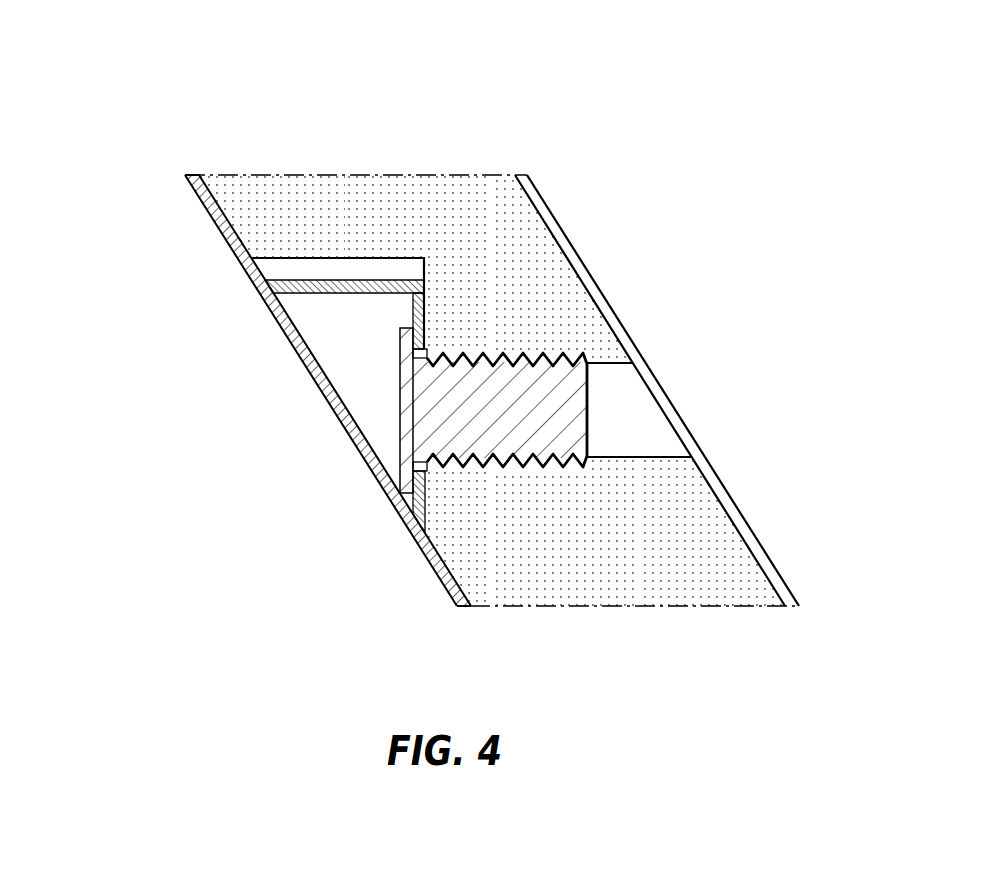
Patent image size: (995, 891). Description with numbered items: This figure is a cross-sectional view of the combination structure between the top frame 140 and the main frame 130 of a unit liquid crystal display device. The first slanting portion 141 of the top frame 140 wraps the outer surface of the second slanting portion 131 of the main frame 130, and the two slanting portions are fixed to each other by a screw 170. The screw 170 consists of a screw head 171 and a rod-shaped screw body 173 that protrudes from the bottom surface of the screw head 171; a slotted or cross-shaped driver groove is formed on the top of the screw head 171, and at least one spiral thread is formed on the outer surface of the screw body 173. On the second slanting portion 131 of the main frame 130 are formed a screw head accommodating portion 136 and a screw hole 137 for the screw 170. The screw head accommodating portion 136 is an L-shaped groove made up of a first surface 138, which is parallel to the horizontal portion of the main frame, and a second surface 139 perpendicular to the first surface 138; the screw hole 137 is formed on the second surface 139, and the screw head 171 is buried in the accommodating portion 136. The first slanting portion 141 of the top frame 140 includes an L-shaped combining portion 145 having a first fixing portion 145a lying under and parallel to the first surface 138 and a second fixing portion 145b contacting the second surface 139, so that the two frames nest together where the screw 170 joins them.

The main frame 130 is at (516, 166).
The second slanting portion 131 is at (237, 205).
The screw head accommodating portion 136 is at (380, 178).
The screw hole 137 is at (653, 418).
The first surface 138 is at (332, 248).
The second surface 139 is at (438, 263).
The top frame 140 is at (192, 168).
The first slanting portion 141 is at (220, 232).
The combining portion 145 is at (251, 413).
The first fixing portion 145a is at (342, 293).
The second fixing portion 145b is at (410, 307).
The screw 170 is at (480, 523).
The screw head 171 is at (400, 452).
The screw body 173 is at (513, 456).